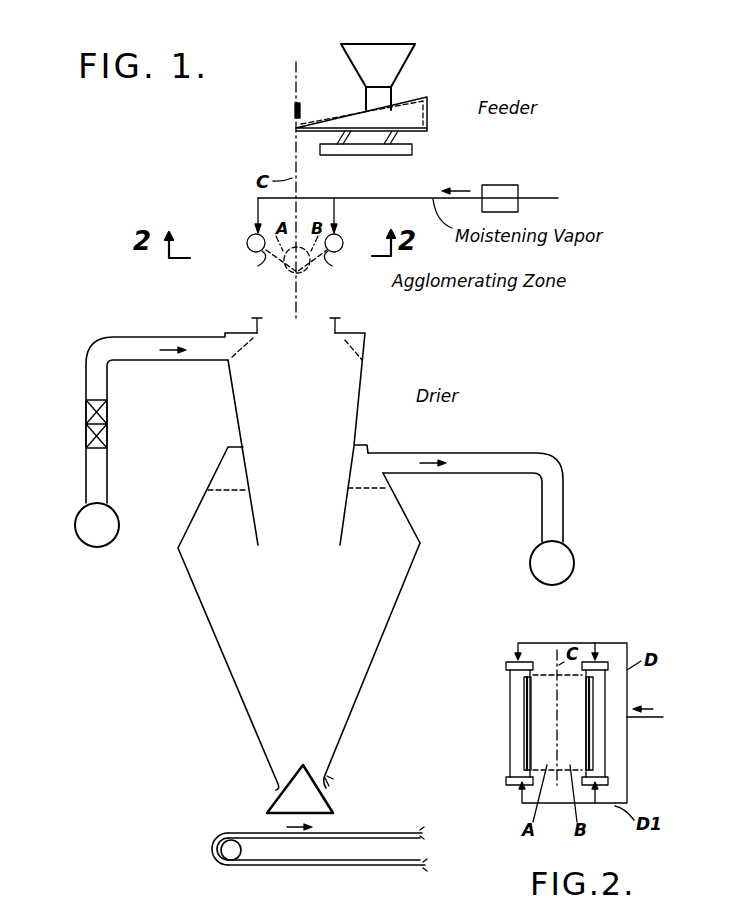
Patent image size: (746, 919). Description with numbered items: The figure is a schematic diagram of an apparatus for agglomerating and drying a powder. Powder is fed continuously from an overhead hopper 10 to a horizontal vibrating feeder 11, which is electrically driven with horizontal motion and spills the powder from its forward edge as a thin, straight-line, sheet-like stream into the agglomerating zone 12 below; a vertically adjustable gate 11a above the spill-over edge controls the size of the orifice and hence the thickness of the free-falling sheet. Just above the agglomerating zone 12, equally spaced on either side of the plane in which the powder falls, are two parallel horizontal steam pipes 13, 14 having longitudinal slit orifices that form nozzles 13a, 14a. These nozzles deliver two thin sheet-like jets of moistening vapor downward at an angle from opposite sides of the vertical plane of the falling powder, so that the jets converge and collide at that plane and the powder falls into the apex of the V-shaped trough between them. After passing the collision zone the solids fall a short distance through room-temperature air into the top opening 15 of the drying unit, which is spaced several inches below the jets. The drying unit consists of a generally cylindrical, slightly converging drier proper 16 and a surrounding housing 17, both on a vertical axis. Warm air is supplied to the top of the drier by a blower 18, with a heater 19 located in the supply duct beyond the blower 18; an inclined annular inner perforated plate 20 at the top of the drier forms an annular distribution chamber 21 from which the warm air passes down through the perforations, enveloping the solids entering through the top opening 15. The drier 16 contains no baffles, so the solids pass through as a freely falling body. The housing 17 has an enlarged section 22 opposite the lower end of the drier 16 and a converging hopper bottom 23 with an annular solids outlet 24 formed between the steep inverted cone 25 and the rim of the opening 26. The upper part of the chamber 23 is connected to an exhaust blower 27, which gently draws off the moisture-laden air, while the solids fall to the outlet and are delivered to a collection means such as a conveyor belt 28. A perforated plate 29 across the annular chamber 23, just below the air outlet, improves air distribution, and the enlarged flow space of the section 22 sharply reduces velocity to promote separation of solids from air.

In FIG. 1, the overhead hopper 10 is at (402, 59).
In FIG. 1, the horizontal vibrating feeder 11 is at (427, 113).
In FIG. 1, the vertically adjustable gate 11a is at (294, 111).
In FIG. 1, the agglomerating zone 12 is at (302, 271).
In FIG. 1, the steam pipe 13 is at (251, 254).
In FIG. 2, the steam pipe 13 is at (509, 709).
In FIG. 1, the nozzle 13a is at (268, 266).
In FIG. 2, the nozzle 13a is at (524, 738).
In FIG. 1, the steam pipe 14 is at (340, 238).
In FIG. 2, the steam pipe 14 is at (605, 706).
In FIG. 1, the nozzle 14a is at (332, 266).
In FIG. 2, the nozzle 14a is at (593, 740).
In FIG. 1, the top opening 15 is at (283, 324).
In FIG. 1, the drier proper 16 is at (354, 407).
In FIG. 1, the housing 17 is at (272, 618).
In FIG. 1, the blower 18 is at (79, 534).
In FIG. 1, the heater 19 is at (108, 417).
In FIG. 1, the inclined inner perforated plate 20 is at (365, 340).
In FIG. 1, the annular distribution chamber 21 is at (238, 337).
In FIG. 1, the enlarged section 22 is at (421, 546).
In FIG. 1, the hopper bottom 23 is at (345, 733).
In FIG. 1, the annular solids outlet 24 is at (282, 783).
In FIG. 1, the inverted cone 25 is at (332, 806).
In FIG. 1, the opening 26 is at (334, 780).
In FIG. 1, the exhaust blower 27 is at (574, 558).
In FIG. 1, the conveyor belt 28 is at (393, 830).
In FIG. 1, the perforated plate 29 is at (374, 490).